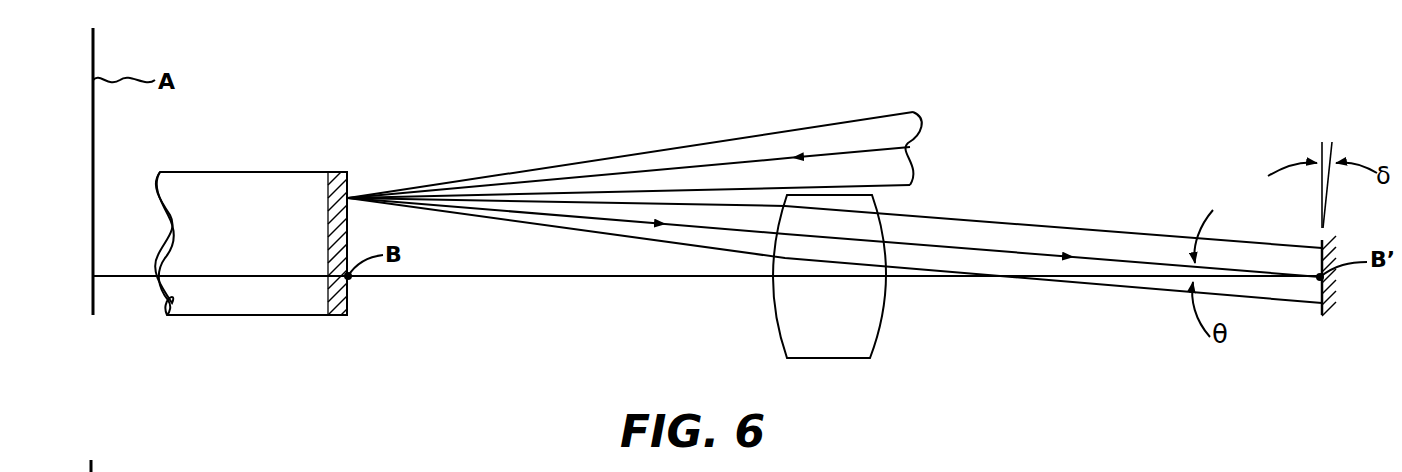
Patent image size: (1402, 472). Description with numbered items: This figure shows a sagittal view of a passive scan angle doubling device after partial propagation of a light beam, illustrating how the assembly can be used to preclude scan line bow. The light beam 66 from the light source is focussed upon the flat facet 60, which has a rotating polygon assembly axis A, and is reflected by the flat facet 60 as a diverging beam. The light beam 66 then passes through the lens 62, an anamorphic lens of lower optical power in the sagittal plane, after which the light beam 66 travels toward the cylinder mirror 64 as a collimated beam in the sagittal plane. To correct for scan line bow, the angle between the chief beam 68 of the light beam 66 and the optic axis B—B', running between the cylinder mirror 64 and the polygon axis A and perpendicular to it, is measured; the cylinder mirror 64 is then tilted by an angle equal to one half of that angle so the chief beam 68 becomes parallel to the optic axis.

The flat facet 60 is at (345, 300).
The lens 62 is at (828, 359).
The cylinder mirror 64 is at (1317, 315).
The light beam 66 is at (817, 126).
The chief beam 68 is at (722, 164).